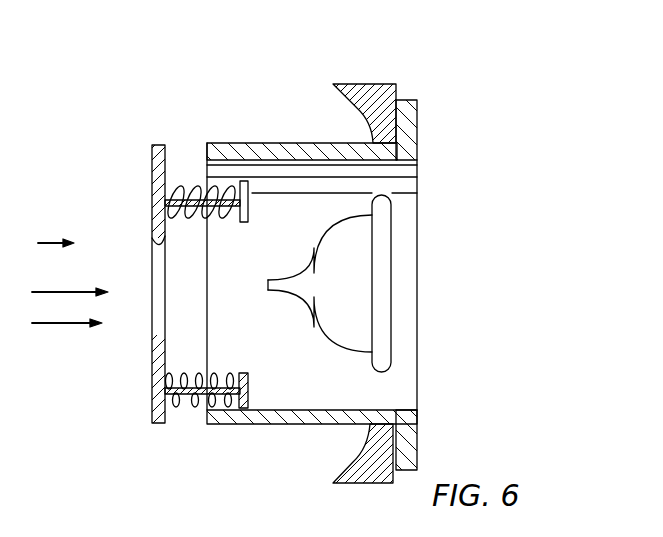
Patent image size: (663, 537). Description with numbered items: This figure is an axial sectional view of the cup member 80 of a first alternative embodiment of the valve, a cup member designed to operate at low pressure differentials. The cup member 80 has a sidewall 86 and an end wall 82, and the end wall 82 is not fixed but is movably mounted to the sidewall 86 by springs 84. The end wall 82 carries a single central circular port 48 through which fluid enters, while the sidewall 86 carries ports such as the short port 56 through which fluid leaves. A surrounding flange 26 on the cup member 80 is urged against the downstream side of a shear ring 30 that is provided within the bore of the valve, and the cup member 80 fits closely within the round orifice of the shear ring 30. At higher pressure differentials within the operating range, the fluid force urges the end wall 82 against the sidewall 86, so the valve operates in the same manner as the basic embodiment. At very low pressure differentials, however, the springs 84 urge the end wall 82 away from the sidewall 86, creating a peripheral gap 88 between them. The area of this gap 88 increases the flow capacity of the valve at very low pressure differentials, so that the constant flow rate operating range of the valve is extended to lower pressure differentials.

The surrounding flange 26 is at (418, 128).
The shear ring 30 is at (358, 84).
The circular port 48 is at (158, 262).
The short port 56 is at (351, 318).
The cup member 80 is at (269, 144).
The end wall 82 is at (156, 172).
The springs 84 is at (166, 205).
The sidewall 86 is at (303, 425).
The peripheral gap 88 is at (183, 163).